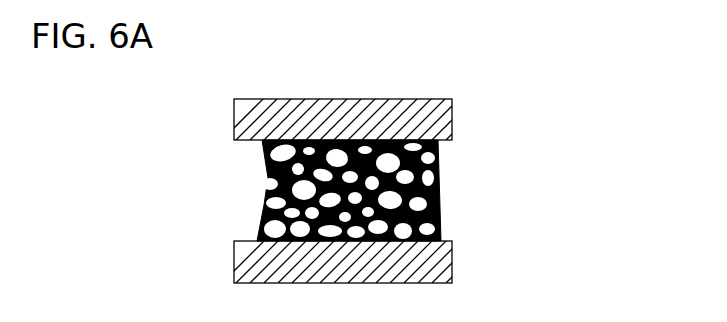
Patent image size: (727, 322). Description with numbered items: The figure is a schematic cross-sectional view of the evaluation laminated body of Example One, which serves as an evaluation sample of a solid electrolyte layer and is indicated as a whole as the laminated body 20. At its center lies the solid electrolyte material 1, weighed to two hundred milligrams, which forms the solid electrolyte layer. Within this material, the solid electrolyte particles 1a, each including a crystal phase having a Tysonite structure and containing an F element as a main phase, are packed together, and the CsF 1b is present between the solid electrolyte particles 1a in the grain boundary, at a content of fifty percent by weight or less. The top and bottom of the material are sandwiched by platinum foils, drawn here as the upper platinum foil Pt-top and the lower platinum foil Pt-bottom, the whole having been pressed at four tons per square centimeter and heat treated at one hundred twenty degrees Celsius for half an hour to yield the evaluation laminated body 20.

The thermistor element / evaluation sample 20 is at (536, 96).
The solid electrolyte material 1 is at (393, 190).
The solid electrolyte particle 1a is at (533, 145).
The CsF 1b is at (435, 152).
The platinum electrode (top) Pt-top is at (452, 115).
The platinum electrode (bottom) Pt-bottom is at (452, 258).